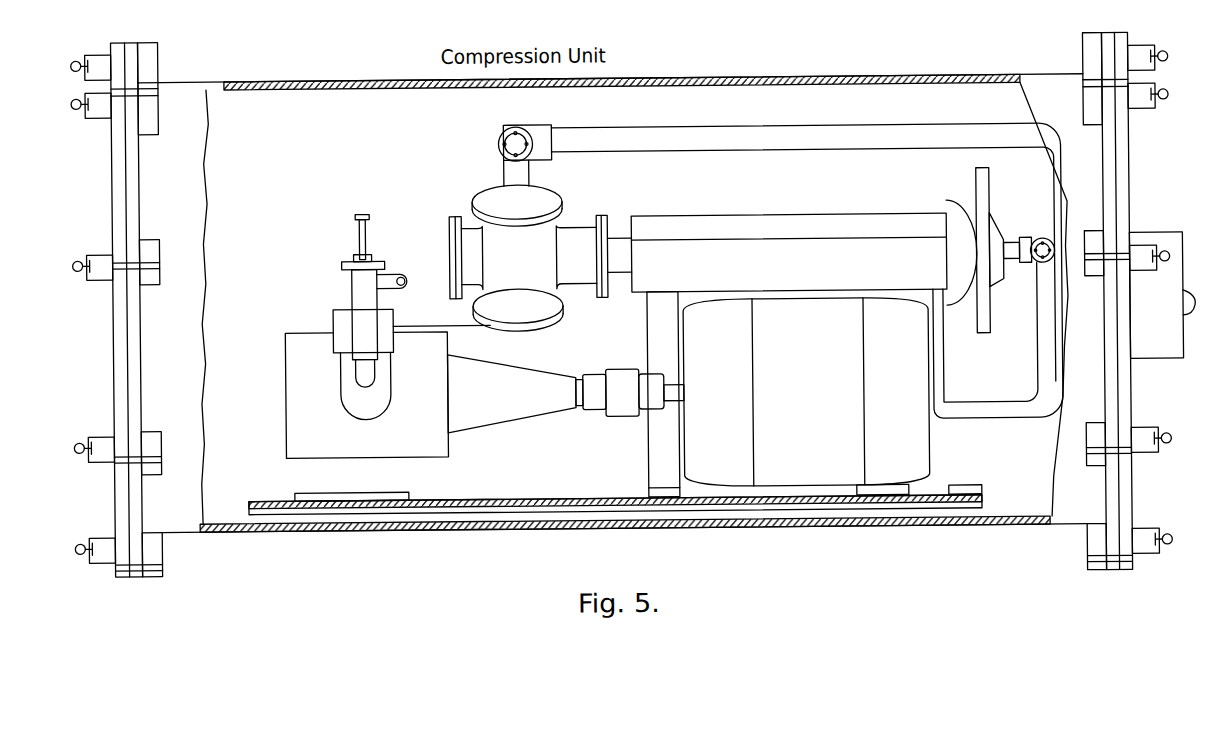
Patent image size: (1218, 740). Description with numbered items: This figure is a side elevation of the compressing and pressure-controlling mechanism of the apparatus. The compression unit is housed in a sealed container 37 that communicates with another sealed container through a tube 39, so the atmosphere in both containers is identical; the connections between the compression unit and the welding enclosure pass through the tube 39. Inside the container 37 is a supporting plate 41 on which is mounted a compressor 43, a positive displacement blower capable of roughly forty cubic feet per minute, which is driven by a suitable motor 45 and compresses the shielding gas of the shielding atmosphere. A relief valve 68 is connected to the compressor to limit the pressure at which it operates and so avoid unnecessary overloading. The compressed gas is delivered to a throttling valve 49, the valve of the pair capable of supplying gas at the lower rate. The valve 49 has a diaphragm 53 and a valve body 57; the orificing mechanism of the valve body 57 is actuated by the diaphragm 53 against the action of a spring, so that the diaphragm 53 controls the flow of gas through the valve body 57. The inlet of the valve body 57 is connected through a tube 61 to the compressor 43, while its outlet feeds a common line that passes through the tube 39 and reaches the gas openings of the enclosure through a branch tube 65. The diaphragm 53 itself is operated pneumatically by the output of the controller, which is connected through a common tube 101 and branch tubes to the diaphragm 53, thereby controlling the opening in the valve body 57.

The container 37 is at (312, 528).
The tube 39 is at (1171, 238).
The supporting plate 41 is at (760, 512).
The compressor 43 is at (482, 457).
The motor 45 is at (819, 462).
The valve 49 is at (846, 211).
The diaphragm 53 is at (968, 203).
The valve body 57 is at (498, 189).
The tube 61 is at (483, 333).
The branch tube 65 is at (785, 152).
The relief valve 68 is at (363, 225).
The common tube 101 is at (1053, 242).